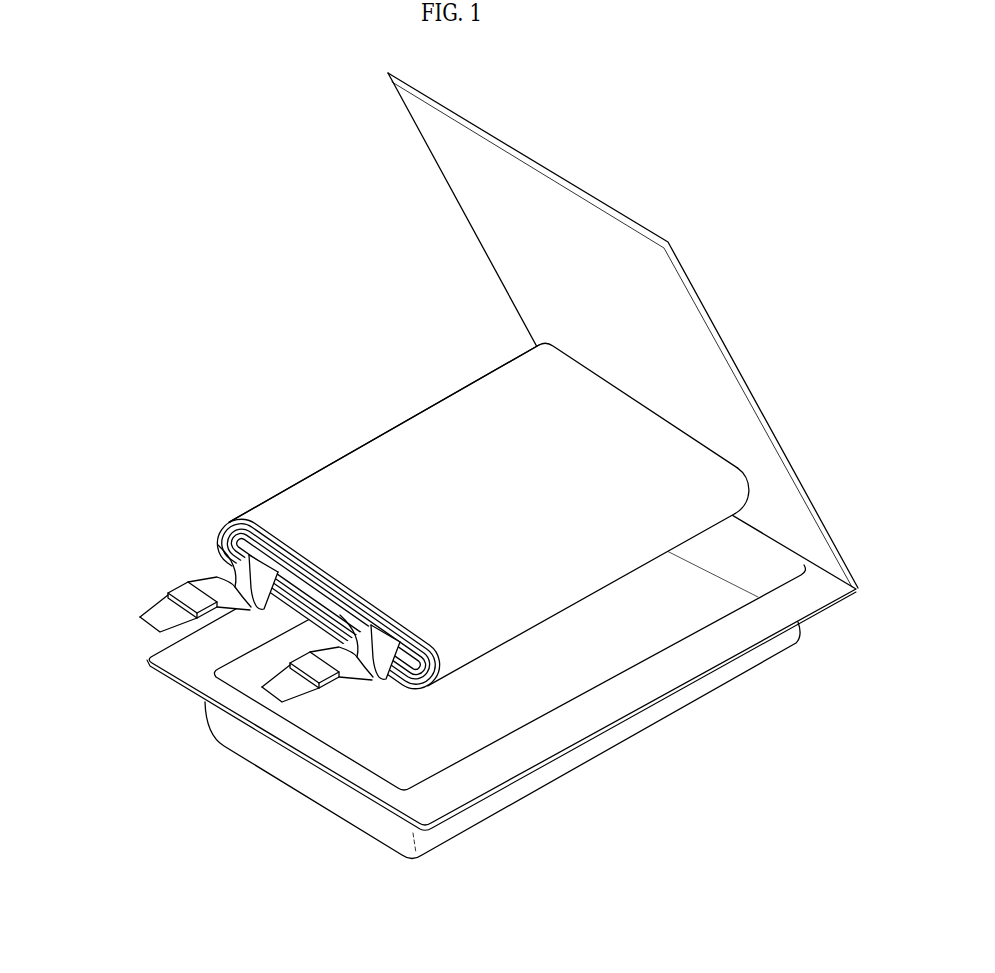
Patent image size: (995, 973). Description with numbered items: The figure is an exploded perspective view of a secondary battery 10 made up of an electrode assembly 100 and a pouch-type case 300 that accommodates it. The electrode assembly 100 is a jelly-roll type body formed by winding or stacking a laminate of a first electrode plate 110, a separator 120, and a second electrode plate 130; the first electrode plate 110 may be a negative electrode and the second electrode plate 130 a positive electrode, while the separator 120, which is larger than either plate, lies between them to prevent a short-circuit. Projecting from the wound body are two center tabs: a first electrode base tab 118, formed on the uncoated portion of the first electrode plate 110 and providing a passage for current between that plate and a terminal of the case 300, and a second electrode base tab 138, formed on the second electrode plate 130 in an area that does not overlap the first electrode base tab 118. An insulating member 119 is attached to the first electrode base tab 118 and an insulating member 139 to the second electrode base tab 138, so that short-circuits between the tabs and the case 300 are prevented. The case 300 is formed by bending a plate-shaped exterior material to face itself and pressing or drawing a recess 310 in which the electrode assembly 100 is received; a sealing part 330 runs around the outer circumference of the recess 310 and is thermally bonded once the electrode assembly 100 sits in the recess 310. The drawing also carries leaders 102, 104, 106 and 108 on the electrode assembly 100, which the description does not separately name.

The secondary battery 10 is at (66, 95).
The electrode assembly 100 is at (503, 529).
The upper surface of electrode assembly 102 is at (690, 437).
The lower surface of electrode assembly 104 is at (665, 552).
The curved side surface of electrode assembly 106 is at (728, 498).
The edge of electrode assembly 108 is at (452, 392).
The first electrode plate 110 is at (215, 550).
The first electrode base tab 118 is at (160, 640).
The insulating member 119 is at (258, 592).
The separator 120 is at (218, 537).
The second electrode plate 130 is at (225, 518).
The second electrode base tab 138 is at (411, 752).
The insulating member 139 is at (322, 676).
The case 300 is at (502, 508).
The recess 310 is at (535, 688).
The sealing part 330 is at (657, 678).